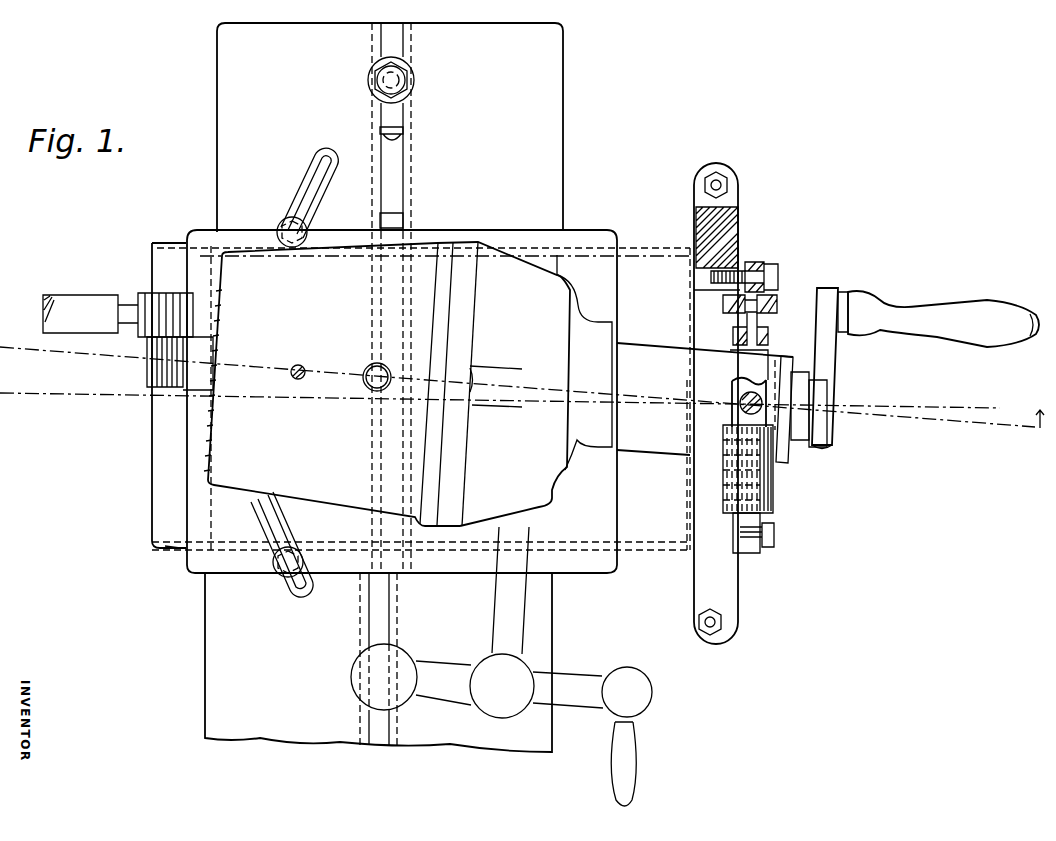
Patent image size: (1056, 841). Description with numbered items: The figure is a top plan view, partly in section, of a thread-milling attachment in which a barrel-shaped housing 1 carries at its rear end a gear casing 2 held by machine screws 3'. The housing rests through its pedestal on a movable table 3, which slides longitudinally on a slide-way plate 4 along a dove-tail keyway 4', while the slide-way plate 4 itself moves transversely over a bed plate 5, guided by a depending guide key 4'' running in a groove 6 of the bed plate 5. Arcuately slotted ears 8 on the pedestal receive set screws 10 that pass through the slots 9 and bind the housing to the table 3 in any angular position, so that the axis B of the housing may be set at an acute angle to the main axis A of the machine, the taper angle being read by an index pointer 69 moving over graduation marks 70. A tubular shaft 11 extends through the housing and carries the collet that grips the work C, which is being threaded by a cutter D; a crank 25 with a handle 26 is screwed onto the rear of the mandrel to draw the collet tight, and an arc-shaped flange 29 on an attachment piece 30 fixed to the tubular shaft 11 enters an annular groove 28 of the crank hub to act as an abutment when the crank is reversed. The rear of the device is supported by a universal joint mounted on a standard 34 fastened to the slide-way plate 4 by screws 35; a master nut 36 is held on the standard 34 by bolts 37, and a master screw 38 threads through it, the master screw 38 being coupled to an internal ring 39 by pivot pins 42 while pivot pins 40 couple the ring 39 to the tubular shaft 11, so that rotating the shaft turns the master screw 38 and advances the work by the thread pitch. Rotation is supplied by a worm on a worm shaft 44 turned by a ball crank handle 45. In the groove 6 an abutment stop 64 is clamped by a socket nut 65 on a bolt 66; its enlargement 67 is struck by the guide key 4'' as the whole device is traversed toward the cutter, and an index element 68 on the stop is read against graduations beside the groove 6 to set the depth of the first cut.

The housing 1 is at (334, 402).
The gear casing 2 is at (524, 384).
The table 3 is at (421, 401).
The machine screws 3' is at (496, 395).
The slide-way plate 4 is at (163, 396).
The dove-tail slide track 4' is at (156, 565).
The guide key 4'' is at (398, 655).
The bed plate 5 is at (222, 627).
The groove 6 is at (375, 624).
The slotted ears 8 is at (305, 170).
The slots 9 is at (305, 185).
The set screws 10 is at (278, 222).
The tubular shaft 11 is at (705, 446).
The crank 25 is at (824, 359).
The handle 26 is at (924, 325).
The annular groove 28 is at (792, 442).
The arc-shaped flange 29 is at (830, 433).
The attachment piece 30 is at (795, 398).
The standard 34 is at (727, 589).
The screws 35 is at (730, 186).
The master nut 36 is at (752, 554).
The bolts 37 is at (780, 277).
The master screw 38 is at (775, 508).
The internal ring 39 is at (763, 383).
The pivot pins 40 is at (745, 398).
The pivot pins 42 is at (747, 318).
The worm shaft 44 is at (604, 631).
The ball crank handle 45 is at (588, 698).
The abutment stop 64 is at (388, 171).
The socket nut 65 is at (412, 78).
The bolt 66 is at (415, 90).
The enlargement 67 is at (385, 222).
The index element 68 is at (405, 140).
The index pointer 69 is at (182, 390).
The graduation marks 70 is at (205, 440).
The main axis A is at (522, 419).
The housing axis B is at (517, 399).
The work C is at (145, 376).
The cutter D is at (137, 297).